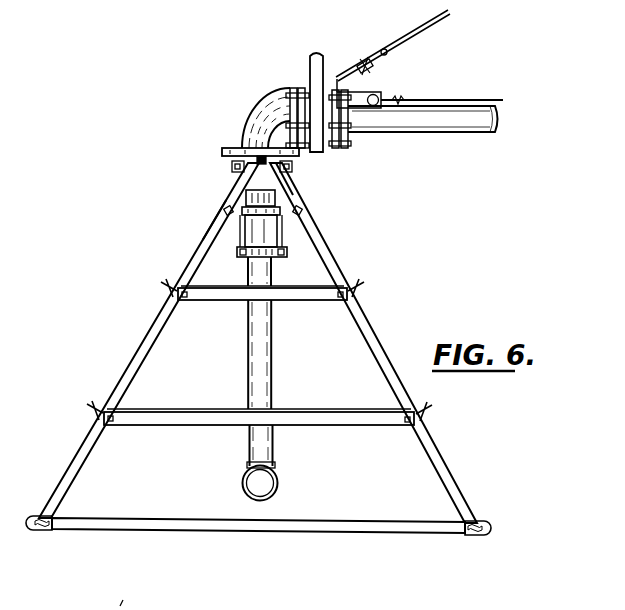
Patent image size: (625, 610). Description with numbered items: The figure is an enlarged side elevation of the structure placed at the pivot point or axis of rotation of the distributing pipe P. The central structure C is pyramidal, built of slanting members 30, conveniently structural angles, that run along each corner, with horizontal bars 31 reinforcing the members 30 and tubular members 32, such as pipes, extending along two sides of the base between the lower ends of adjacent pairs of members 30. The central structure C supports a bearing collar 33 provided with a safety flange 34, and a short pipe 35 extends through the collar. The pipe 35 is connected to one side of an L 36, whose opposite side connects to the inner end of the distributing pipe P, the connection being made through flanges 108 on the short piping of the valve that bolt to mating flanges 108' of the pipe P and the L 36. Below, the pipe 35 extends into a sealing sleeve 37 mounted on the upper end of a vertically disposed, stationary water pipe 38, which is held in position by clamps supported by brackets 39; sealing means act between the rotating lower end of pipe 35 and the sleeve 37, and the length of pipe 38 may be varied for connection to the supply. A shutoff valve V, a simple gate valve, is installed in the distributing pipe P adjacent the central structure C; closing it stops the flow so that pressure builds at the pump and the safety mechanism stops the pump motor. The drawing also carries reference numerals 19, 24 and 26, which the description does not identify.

The control lever rod 19 is at (413, 33).
The actuator rod 24 is at (470, 99).
The element 26 is at (134, 600).
The slanting members 30 is at (139, 353).
The horizontal bars 31 is at (213, 302).
The tubular members 32 is at (214, 523).
The bearing collar 33 is at (289, 190).
The safety flange 34 is at (224, 152).
The short pipe 35 is at (246, 196).
The L 36 is at (251, 123).
The sealing sleeve 37 is at (253, 249).
The stationary water pipe 38 is at (251, 354).
The brackets 39 is at (233, 176).
The flanges 108 is at (350, 131).
The mating flanges 108' is at (281, 105).
The shutoff valve V is at (309, 65).
The distributing pipe P is at (430, 134).
The central structure C is at (206, 220).